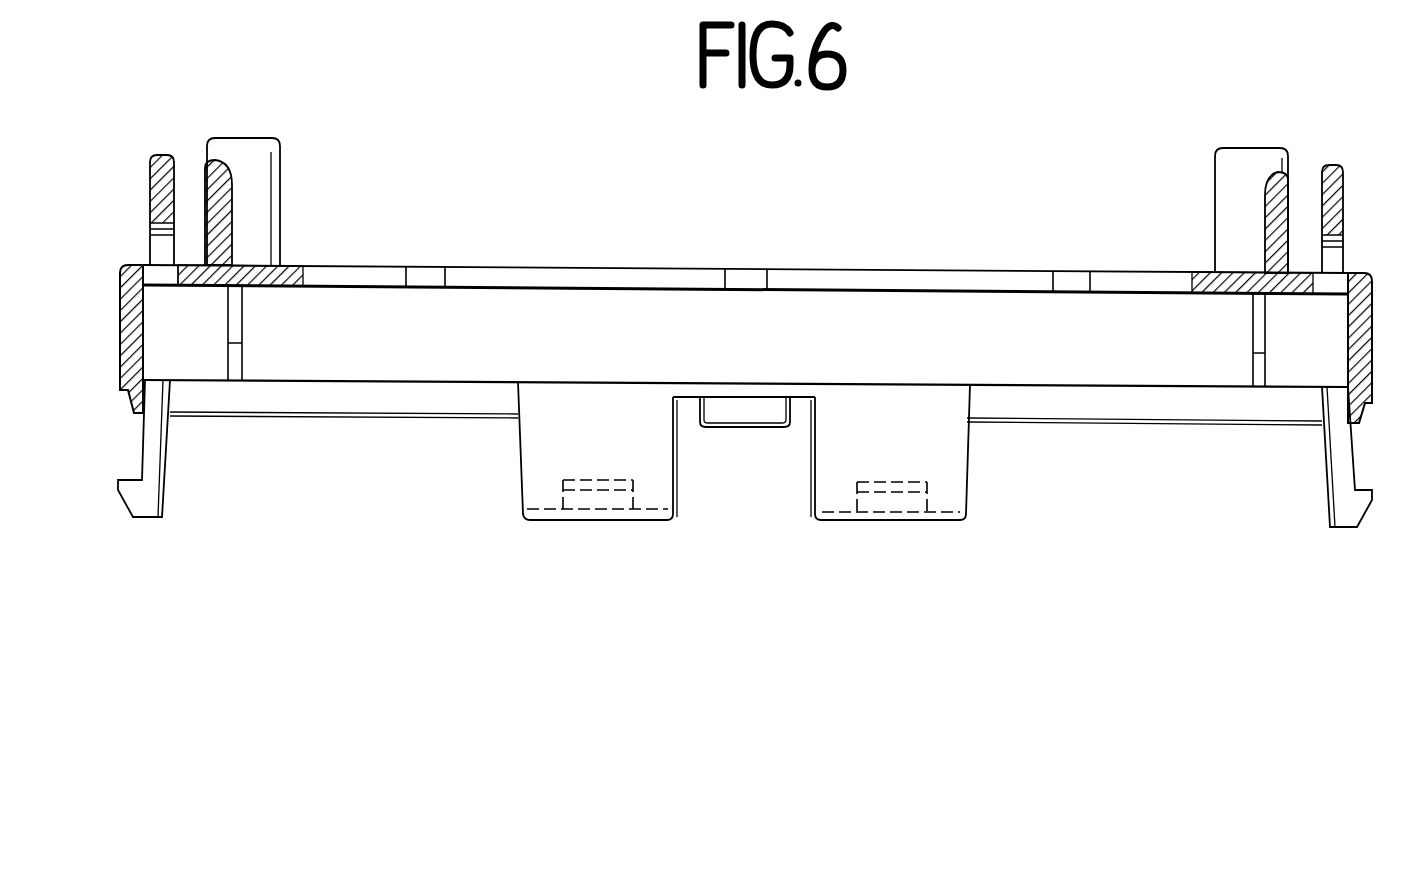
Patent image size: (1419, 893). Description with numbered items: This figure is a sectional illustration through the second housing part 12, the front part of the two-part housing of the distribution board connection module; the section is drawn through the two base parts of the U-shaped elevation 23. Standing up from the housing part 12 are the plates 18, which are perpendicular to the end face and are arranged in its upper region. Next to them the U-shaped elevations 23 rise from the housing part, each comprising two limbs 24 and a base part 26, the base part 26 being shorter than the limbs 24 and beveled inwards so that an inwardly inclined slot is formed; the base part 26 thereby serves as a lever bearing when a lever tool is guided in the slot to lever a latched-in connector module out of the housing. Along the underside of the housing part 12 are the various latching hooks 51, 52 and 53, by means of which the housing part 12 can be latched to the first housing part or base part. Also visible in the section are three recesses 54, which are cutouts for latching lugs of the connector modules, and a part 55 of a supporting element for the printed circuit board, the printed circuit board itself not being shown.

The second housing part 12 is at (912, 225).
The plates 18 is at (158, 186).
The U-shaped elevation 23 is at (728, 182).
The limb 24 is at (266, 150).
The base part 26 is at (210, 178).
The latching hook 51 is at (155, 497).
The latching hook 52 is at (835, 492).
The latching hook 53 is at (742, 417).
The recess 54 is at (420, 283).
The part of a supporting element 55 is at (238, 331).